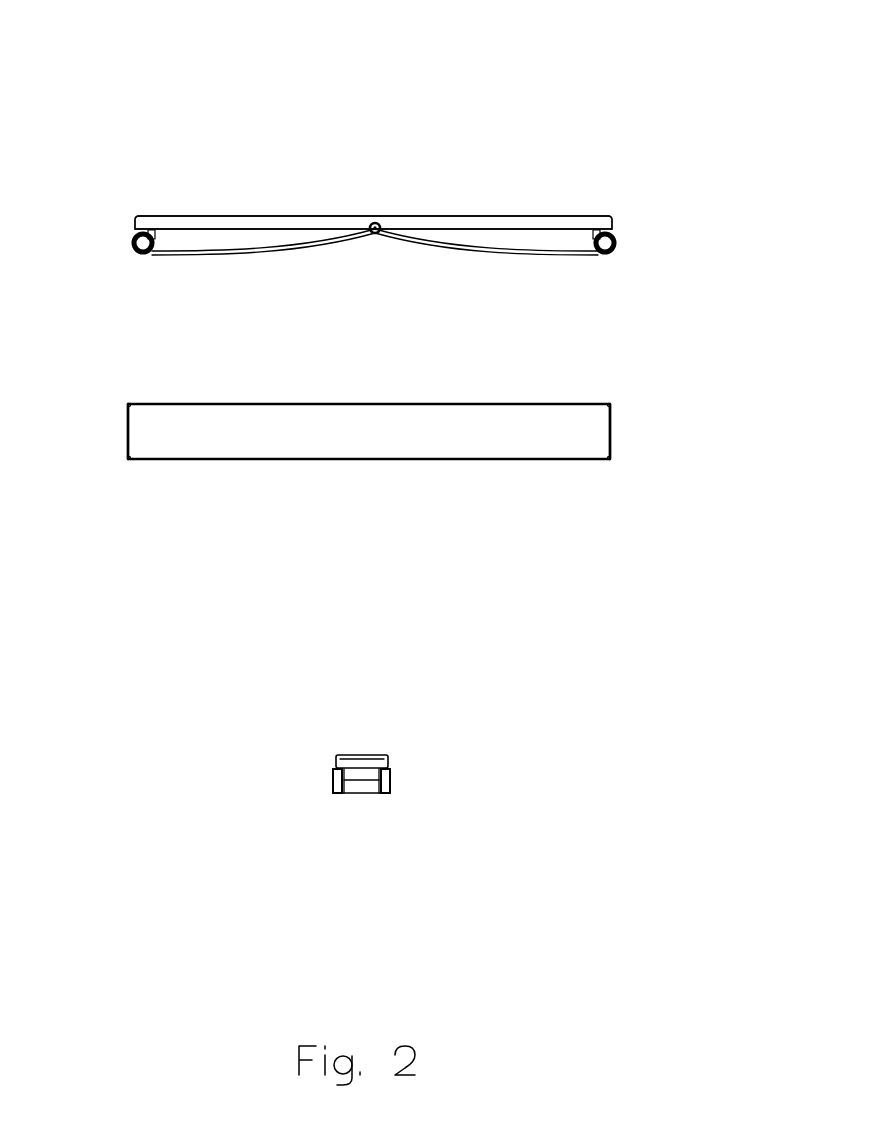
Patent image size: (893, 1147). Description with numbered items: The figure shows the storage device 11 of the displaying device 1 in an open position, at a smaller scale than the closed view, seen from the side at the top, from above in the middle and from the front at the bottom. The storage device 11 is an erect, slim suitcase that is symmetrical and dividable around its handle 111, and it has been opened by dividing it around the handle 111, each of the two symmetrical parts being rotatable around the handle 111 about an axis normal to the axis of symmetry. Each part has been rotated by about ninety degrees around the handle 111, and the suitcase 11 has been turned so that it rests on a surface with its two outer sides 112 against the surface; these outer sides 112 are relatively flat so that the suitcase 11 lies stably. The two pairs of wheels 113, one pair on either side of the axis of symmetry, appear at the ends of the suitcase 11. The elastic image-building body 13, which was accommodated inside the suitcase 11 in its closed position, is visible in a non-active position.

The displaying device 1 is at (250, 114).
The storage device 11 is at (253, 238).
The handle 111 is at (375, 233).
The outer sides 112 is at (520, 252).
The pairs of wheels 113 is at (131, 239).
The elastic image-building body 13 is at (613, 230).